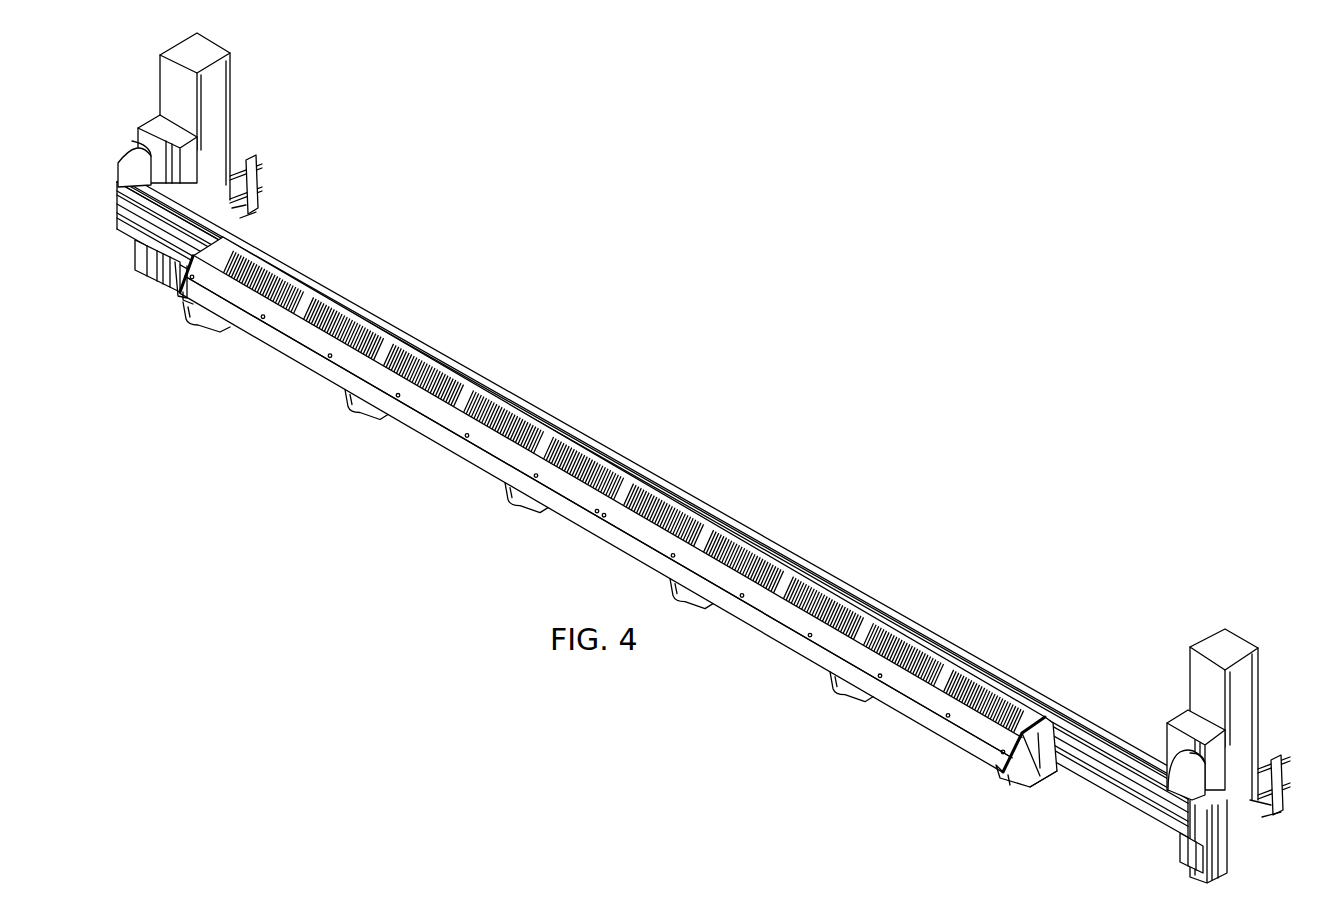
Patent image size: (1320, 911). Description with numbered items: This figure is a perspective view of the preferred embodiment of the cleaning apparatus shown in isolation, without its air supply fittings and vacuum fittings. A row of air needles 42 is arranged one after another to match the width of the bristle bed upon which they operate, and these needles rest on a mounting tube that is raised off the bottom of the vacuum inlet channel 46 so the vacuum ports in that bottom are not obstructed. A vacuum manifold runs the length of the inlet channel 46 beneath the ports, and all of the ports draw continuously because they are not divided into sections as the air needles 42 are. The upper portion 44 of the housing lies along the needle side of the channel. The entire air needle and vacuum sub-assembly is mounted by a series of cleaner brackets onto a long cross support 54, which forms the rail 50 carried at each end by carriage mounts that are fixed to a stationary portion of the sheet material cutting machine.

The air needles 42 is at (903, 636).
The upper front panel of housing 44 is at (920, 694).
The vacuum inlet channel 46 is at (778, 633).
The support rail 50 is at (972, 676).
The cross support 54 is at (597, 441).